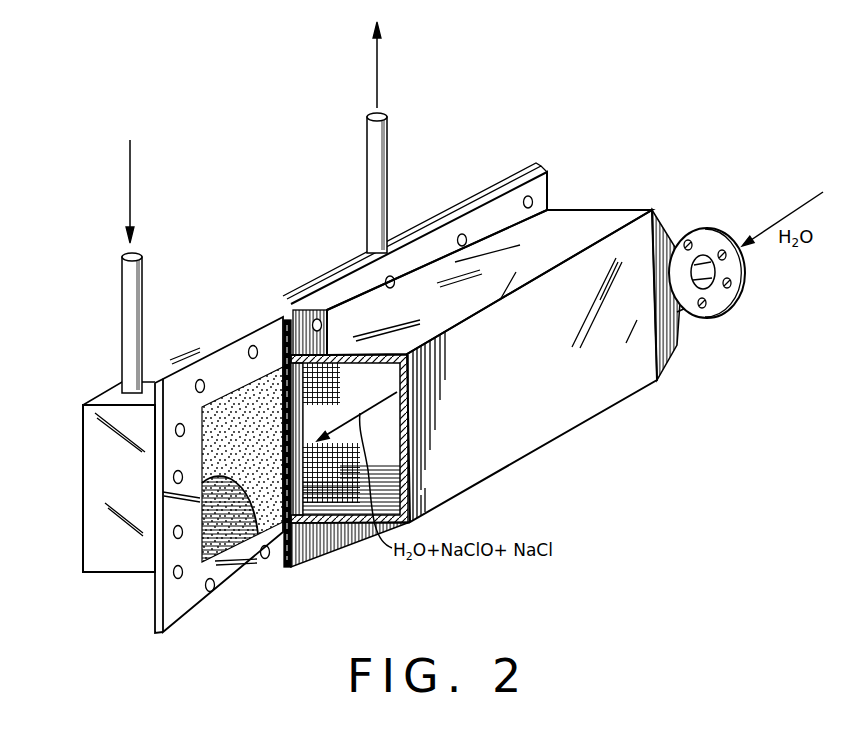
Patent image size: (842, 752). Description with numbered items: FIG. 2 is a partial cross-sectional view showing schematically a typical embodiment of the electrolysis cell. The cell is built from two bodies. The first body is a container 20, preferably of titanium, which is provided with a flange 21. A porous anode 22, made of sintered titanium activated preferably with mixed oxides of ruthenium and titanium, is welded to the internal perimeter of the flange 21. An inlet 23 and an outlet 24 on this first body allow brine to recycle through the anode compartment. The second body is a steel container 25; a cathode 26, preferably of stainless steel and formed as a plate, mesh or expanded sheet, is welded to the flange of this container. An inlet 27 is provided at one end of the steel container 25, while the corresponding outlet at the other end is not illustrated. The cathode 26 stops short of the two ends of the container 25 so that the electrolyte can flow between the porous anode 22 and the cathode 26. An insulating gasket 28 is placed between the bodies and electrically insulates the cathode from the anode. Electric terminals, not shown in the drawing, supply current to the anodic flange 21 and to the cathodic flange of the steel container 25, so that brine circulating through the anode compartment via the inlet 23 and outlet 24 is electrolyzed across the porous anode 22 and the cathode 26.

The container 20 is at (100, 508).
The flange 21 is at (182, 608).
The porous anode 22 is at (252, 462).
The inlet 23 is at (137, 300).
The outlet 24 is at (388, 140).
The steel container 25 is at (577, 426).
The cathode 26 is at (326, 483).
The inlet 27 is at (690, 262).
The insulating gasket 28 is at (284, 336).